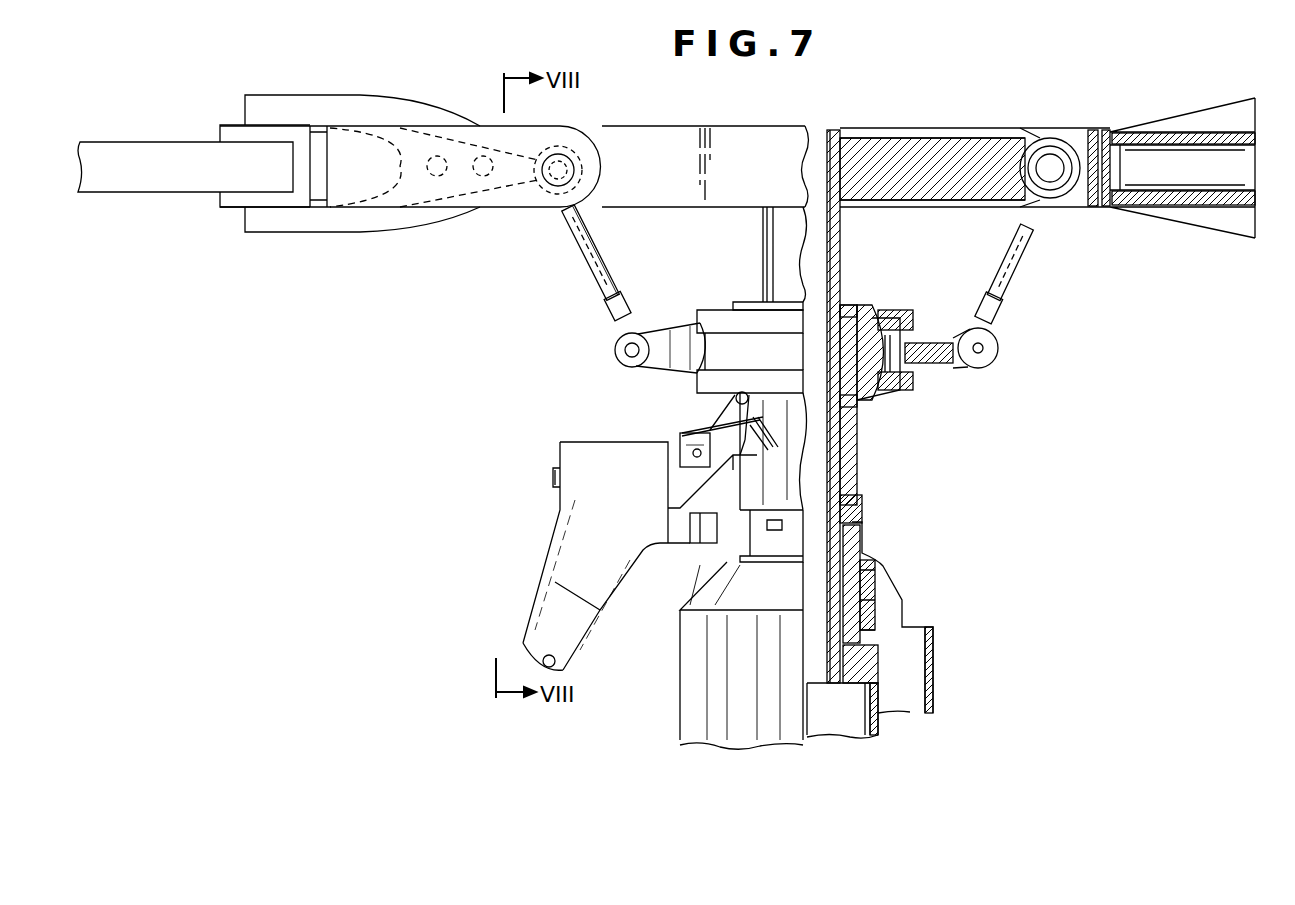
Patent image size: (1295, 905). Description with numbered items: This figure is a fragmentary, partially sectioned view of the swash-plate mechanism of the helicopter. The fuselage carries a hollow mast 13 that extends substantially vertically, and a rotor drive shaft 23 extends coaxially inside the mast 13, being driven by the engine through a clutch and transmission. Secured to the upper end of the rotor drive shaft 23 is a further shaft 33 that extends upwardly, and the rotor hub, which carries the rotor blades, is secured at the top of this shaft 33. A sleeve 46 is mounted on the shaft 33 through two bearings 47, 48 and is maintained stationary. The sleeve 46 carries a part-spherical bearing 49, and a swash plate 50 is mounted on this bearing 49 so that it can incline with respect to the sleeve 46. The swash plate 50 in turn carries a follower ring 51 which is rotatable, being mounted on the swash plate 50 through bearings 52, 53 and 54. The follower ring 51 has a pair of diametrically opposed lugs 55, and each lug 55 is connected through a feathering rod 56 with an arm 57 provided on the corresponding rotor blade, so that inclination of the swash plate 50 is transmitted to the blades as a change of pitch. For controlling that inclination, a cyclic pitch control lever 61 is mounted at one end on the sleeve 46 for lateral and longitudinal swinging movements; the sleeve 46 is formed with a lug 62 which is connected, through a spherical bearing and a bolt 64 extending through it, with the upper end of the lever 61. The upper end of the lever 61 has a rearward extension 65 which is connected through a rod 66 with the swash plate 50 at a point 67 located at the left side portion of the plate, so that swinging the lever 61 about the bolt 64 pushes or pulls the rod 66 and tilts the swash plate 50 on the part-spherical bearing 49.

The hollow mast 13 is at (935, 640).
The rotor drive shaft 23 is at (880, 705).
The shaft 33 is at (850, 474).
The sleeve 46 is at (852, 443).
The bearing 47 is at (850, 308).
The bearing 48 is at (850, 503).
The part-spherical bearing 49 is at (870, 312).
The swash plate 50 is at (895, 402).
The follower ring 51 is at (915, 345).
The bearing 52 is at (905, 312).
The bearing 53 is at (935, 362).
The bearing 54 is at (905, 388).
The lug 55 is at (662, 345).
The feathering rod 56 is at (600, 288).
The arm 57 is at (540, 186).
The cyclic pitch control lever 61 is at (575, 638).
The lug 62 is at (686, 435).
The bolt 64 is at (688, 455).
The rearward extension 65 is at (733, 468).
The rod 66 is at (750, 440).
The point 67 is at (742, 392).